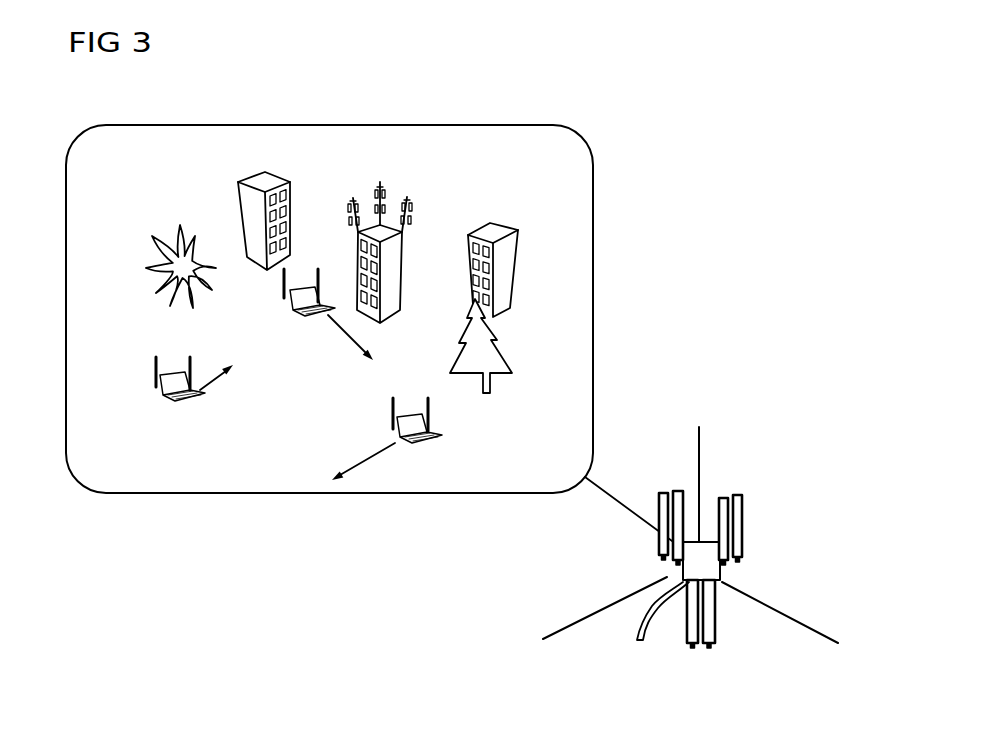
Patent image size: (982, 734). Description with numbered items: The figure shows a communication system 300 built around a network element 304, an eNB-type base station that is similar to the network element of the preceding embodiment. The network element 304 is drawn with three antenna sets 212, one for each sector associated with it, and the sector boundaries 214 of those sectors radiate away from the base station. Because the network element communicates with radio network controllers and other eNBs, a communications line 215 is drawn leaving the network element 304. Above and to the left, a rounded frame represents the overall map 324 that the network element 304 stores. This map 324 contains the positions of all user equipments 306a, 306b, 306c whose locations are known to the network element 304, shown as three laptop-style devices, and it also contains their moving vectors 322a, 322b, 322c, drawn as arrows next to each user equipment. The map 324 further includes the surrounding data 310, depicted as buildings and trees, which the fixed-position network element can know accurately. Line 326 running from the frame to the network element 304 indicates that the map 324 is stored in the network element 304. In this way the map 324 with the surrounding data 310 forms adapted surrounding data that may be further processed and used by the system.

The communication system 300 is at (708, 105).
The surrounding data 310 is at (467, 197).
The user equipment 306a is at (407, 414).
The user equipment 306b is at (173, 378).
The user equipment 306c is at (284, 303).
The moving vector 322a is at (356, 465).
The moving vector 322b is at (216, 388).
The moving vector 322c is at (350, 338).
The overall map 324 is at (332, 496).
The line 326 is at (613, 506).
The antenna set 212 is at (678, 487).
The sector boundary 214 is at (701, 450).
The network element 304 is at (721, 584).
The communications line 215 is at (636, 643).